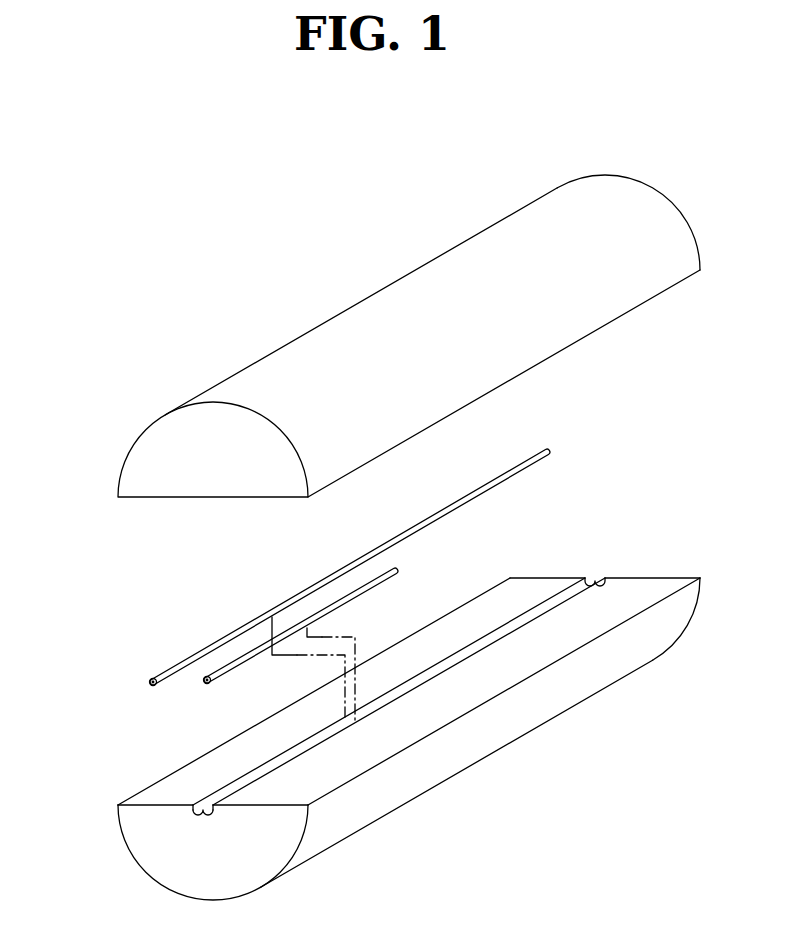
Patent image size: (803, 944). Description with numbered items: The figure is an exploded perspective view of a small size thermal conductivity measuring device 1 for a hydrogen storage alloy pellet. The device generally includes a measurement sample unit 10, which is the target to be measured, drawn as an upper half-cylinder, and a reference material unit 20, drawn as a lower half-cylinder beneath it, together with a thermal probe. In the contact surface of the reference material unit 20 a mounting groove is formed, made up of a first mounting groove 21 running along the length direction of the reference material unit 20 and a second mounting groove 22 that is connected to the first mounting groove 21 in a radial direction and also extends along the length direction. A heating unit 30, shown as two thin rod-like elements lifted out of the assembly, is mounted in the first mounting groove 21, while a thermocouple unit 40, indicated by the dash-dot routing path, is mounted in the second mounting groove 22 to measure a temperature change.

The small size thermal conductivity measuring device 1 is at (197, 277).
The measurement sample unit 10 is at (473, 258).
The reference material unit 20 is at (512, 723).
The first mounting groove 21 is at (198, 812).
The second mounting groove 22 is at (212, 815).
The heating unit 30 is at (125, 676).
The thermocouple unit 40 is at (415, 560).